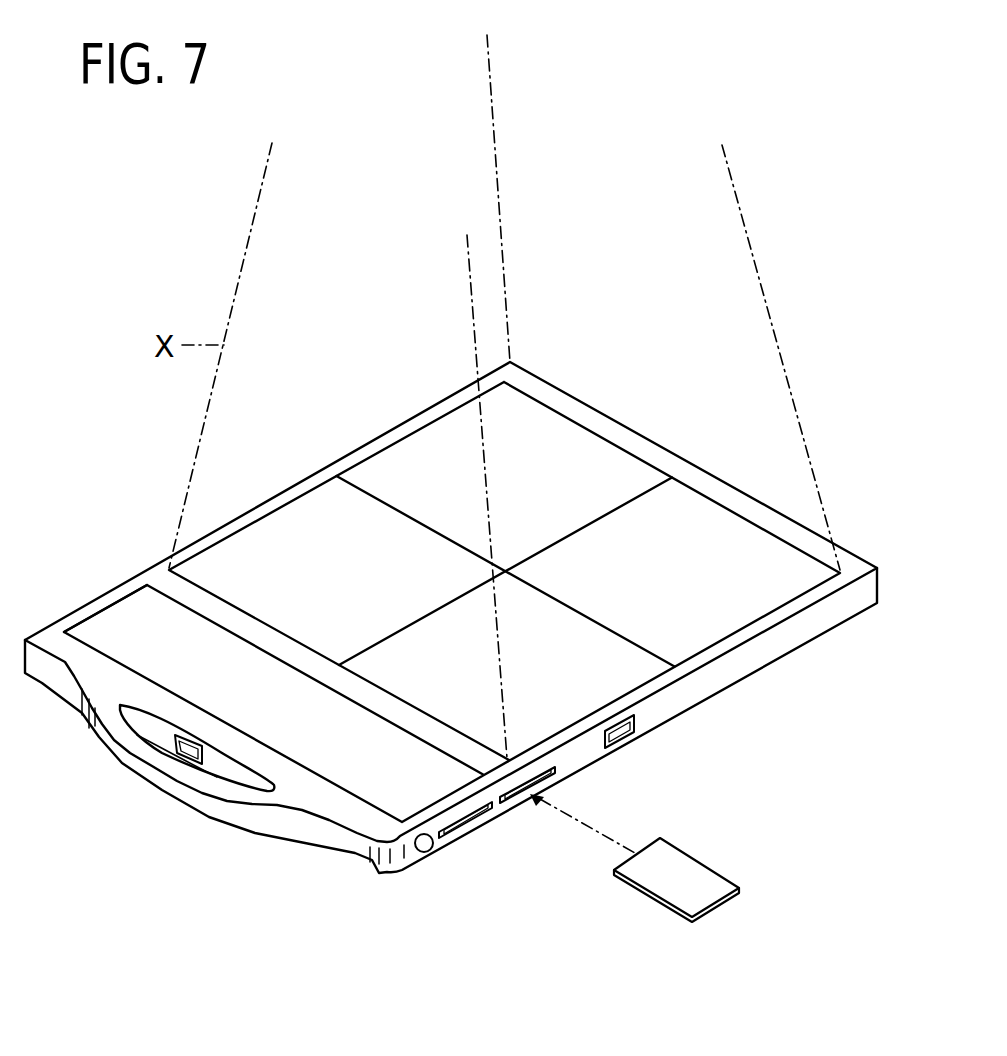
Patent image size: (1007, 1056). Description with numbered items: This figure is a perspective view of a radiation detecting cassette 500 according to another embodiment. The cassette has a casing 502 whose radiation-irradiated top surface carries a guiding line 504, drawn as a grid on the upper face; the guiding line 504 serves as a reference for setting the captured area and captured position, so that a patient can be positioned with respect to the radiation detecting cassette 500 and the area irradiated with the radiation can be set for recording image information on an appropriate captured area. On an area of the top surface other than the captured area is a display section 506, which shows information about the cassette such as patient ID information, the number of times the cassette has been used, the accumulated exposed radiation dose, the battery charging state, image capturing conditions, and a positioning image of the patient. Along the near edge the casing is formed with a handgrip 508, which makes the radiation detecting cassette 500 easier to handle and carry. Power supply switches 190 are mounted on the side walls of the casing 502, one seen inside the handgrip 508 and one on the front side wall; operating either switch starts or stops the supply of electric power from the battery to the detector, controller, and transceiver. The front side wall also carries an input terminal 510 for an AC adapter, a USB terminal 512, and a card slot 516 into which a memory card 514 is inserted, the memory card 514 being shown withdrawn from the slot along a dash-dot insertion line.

The radiation detecting cassette 500 is at (144, 550).
The casing 502 is at (723, 676).
The guiding line 504 is at (578, 427).
The display section 506 is at (88, 630).
The handgrip 508 is at (172, 790).
The power supply switch 190 is at (186, 735).
The input terminal 510 is at (428, 853).
The USB terminal 512 is at (467, 822).
The card slot 516 is at (524, 800).
The memory card 514 is at (708, 880).